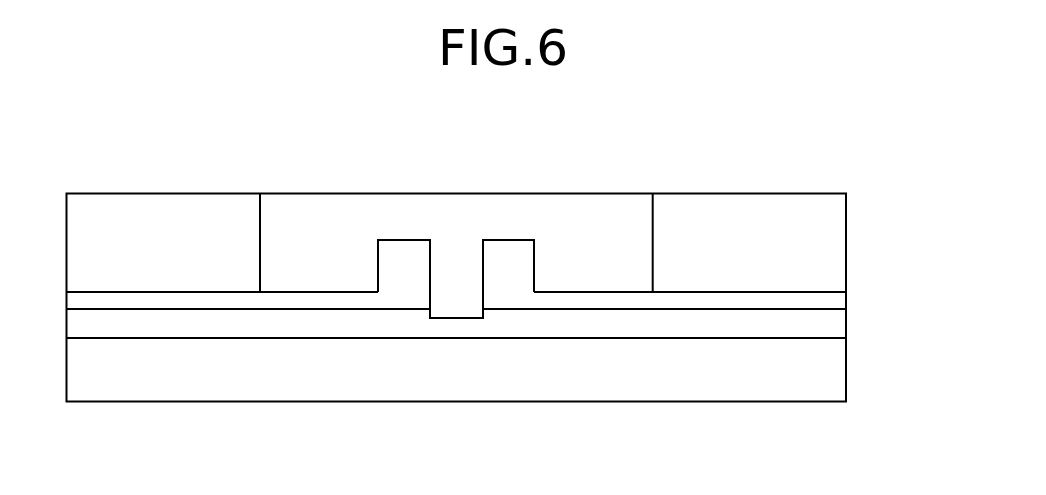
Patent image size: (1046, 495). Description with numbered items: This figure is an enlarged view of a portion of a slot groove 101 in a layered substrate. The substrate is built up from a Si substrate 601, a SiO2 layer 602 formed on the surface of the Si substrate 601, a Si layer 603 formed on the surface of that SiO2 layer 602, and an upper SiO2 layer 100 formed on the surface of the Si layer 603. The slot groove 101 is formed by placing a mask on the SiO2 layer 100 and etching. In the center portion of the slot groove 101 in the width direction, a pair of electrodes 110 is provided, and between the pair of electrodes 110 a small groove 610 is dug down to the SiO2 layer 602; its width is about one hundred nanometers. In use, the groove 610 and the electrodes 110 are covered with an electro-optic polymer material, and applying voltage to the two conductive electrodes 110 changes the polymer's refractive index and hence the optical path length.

The SiO2 layer 100 is at (833, 242).
The slot groove 101 is at (613, 217).
The pair of electrodes 110 is at (405, 252).
The Si substrate 601 is at (833, 371).
The SiO2 layer 602 is at (833, 327).
The Si layer 603 is at (833, 298).
The groove 610 is at (457, 318).